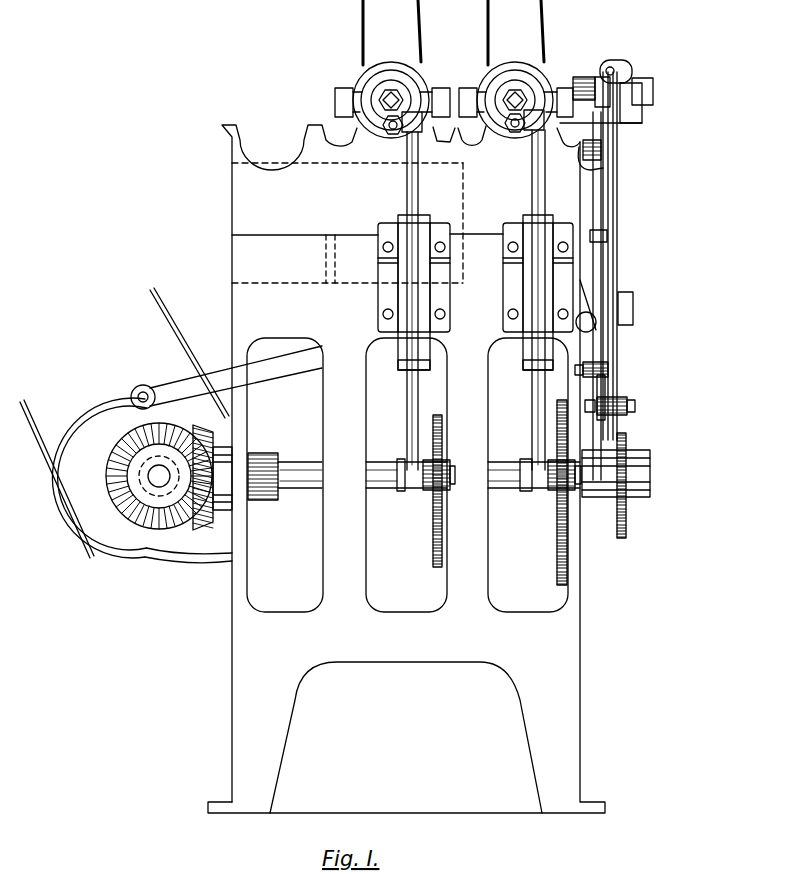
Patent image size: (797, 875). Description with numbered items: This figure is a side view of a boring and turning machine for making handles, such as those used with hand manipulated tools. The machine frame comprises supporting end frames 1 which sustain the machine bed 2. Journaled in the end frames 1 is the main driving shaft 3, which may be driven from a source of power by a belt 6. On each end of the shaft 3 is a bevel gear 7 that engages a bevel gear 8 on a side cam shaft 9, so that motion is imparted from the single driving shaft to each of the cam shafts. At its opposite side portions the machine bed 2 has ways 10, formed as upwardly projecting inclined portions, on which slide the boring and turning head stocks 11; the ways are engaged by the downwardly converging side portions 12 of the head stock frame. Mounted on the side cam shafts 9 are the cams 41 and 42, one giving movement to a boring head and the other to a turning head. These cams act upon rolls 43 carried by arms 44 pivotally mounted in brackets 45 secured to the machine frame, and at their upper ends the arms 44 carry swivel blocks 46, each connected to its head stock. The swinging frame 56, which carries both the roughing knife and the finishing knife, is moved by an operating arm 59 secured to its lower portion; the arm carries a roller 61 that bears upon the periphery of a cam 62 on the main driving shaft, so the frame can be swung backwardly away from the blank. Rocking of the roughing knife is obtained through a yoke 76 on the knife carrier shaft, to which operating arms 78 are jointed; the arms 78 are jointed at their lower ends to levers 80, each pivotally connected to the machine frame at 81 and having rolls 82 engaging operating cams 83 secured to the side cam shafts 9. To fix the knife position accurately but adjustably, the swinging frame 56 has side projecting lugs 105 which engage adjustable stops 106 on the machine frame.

The supporting end frames 1 is at (245, 667).
The machine bed 2 is at (247, 203).
The main driving shaft 3 is at (150, 480).
The belt 6 is at (152, 291).
The bevel gear 7 is at (118, 450).
The bevel gear 8 is at (205, 530).
The side cam shaft 9 is at (315, 490).
The ways 10 is at (470, 145).
The boring and turning head stock 11 is at (401, 80).
The side portions 12 is at (455, 142).
The cam 41 is at (432, 545).
The cam 42 is at (557, 551).
The roll 43 is at (557, 487).
The arm 44 is at (405, 205).
The bracket 45 is at (400, 297).
The swivel block 46 is at (393, 135).
The swinging frame 56 is at (588, 205).
The operating arm 59 is at (278, 372).
The roller 61 is at (143, 388).
The cam 62 is at (100, 452).
The yoke 76 is at (625, 72).
The operating arms 78 is at (612, 258).
The lever 80 is at (604, 392).
The pivotal connection 81 is at (612, 375).
The roll 82 is at (633, 406).
The operating cam 83 is at (625, 443).
The side projecting lug 105 is at (602, 141).
The adjustable stop 106 is at (603, 165).